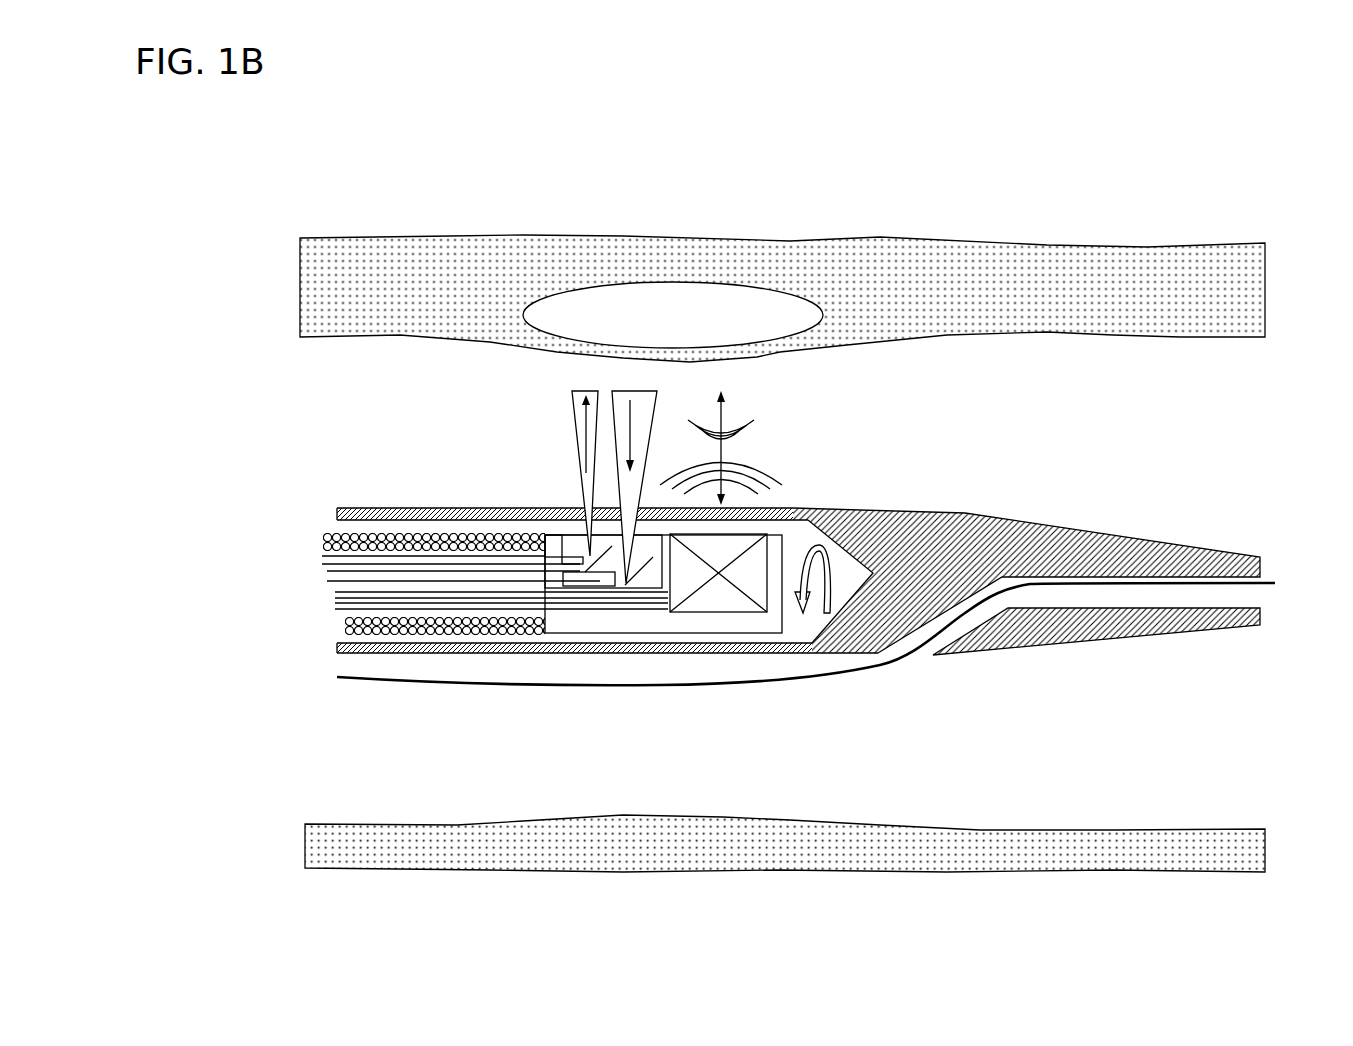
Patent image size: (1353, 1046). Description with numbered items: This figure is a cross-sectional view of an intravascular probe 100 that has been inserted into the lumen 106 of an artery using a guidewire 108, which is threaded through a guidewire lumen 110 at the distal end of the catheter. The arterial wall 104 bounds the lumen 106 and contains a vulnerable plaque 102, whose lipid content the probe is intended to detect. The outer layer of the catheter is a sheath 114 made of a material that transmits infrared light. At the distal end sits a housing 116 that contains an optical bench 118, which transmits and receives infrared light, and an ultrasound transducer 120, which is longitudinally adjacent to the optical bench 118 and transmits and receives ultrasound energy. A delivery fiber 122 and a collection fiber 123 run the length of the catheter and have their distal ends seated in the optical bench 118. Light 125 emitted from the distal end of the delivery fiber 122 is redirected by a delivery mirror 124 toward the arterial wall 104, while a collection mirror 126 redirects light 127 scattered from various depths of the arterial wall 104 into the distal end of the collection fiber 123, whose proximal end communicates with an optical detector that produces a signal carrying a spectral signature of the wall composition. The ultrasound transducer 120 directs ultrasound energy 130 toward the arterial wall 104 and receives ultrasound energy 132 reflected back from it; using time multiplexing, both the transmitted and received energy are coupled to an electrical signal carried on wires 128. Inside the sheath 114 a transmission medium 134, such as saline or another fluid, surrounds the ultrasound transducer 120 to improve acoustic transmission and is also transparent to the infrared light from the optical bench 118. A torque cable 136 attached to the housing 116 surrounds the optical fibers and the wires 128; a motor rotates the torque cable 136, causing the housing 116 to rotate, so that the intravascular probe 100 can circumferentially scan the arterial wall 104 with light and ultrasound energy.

The intravascular probe 100 is at (731, 582).
The vulnerable plaque 102 is at (697, 329).
The arterial wall 104 is at (1128, 340).
The lumen 106 is at (1167, 470).
The guidewire 108 is at (585, 688).
The guidewire lumen 110 is at (1088, 615).
The sheath 114 is at (405, 510).
The housing 116 is at (698, 622).
The optical bench 118 is at (577, 542).
The ultrasound transducer 120 is at (767, 535).
The delivery fiber 122 is at (320, 561).
The collection fiber 123 is at (325, 575).
The delivery mirror 124 is at (594, 556).
The light 125 is at (572, 412).
The collection mirror 126 is at (651, 557).
The light 127 is at (650, 432).
The wires 128 is at (328, 605).
The ultrasound energy 130 is at (782, 462).
The ultrasound energy 132 is at (772, 409).
The transmission medium 134 is at (805, 632).
The torque cable 136 is at (323, 538).